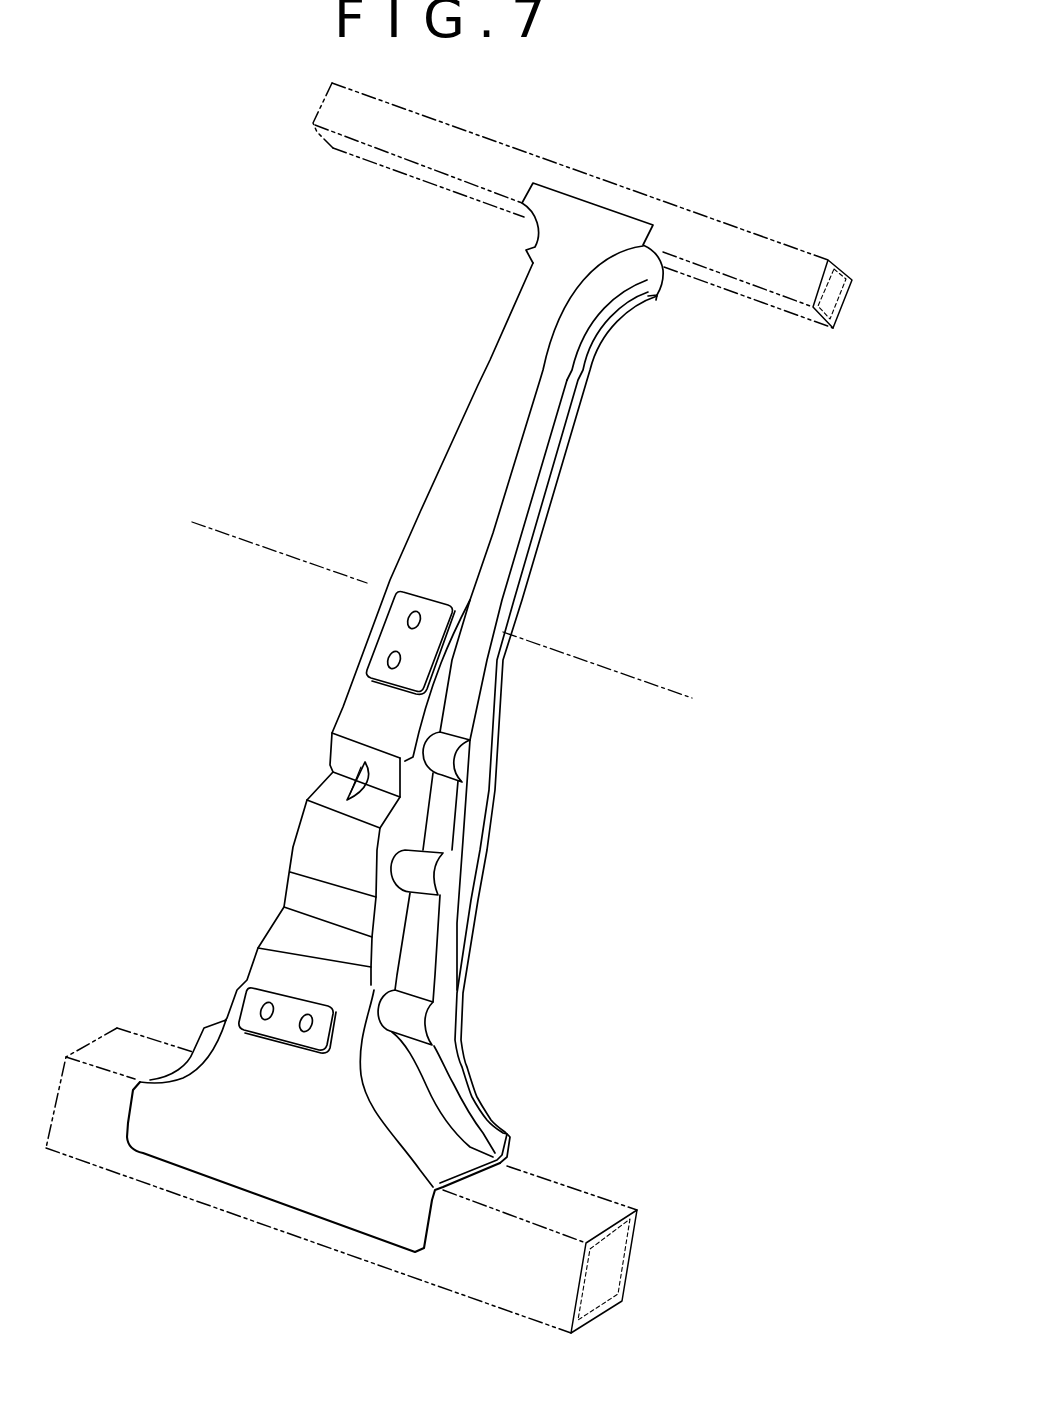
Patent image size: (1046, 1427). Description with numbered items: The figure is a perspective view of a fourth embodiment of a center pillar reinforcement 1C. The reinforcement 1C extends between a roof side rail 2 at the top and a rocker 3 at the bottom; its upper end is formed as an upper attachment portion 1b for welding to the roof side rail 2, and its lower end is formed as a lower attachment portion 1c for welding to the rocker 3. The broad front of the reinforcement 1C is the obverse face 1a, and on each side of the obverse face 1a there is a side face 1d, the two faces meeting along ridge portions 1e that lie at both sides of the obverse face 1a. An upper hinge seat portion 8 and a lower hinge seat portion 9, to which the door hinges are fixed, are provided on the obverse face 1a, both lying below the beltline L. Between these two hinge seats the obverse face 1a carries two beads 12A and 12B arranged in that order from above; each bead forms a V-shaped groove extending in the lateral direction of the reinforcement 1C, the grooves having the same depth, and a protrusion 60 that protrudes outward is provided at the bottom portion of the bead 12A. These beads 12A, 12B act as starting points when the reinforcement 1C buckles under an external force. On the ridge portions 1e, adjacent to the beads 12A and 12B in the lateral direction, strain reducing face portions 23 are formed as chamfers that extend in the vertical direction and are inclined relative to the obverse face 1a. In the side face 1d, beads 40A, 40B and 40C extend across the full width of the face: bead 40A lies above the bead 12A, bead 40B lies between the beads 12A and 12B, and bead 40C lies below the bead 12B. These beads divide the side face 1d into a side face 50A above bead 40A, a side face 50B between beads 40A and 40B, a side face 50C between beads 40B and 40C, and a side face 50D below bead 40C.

The obverse face 1a is at (485, 398).
The upper attachment portion 1b is at (663, 254).
The lower attachment portion 1c is at (482, 1174).
The side face 1d is at (530, 224).
The ridge portion 1e is at (420, 512).
The reinforcement 1C is at (577, 434).
The roof side rail 2 is at (781, 240).
The rocker 3 is at (629, 1261).
The upper hinge seat portion 8 is at (390, 634).
The lower hinge seat portion 9 is at (250, 1003).
The bead 12A is at (330, 784).
The bead 12B is at (320, 927).
The strain reducing face portion 23 is at (372, 985).
The bead 40A is at (443, 757).
The bead 40B is at (425, 873).
The bead 40C is at (410, 1016).
The side face 50A is at (467, 687).
The side face 50B is at (448, 814).
The side face 50C is at (432, 927).
The side face 50D is at (433, 1090).
The protrusion 60 is at (337, 773).
The beltline L is at (444, 612).